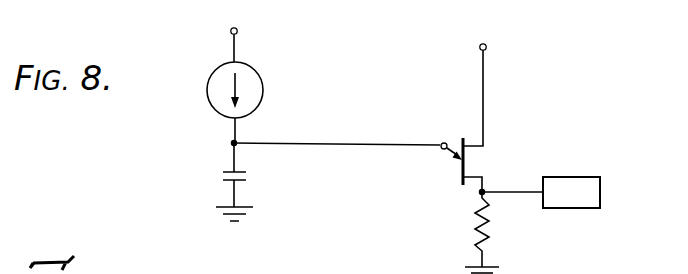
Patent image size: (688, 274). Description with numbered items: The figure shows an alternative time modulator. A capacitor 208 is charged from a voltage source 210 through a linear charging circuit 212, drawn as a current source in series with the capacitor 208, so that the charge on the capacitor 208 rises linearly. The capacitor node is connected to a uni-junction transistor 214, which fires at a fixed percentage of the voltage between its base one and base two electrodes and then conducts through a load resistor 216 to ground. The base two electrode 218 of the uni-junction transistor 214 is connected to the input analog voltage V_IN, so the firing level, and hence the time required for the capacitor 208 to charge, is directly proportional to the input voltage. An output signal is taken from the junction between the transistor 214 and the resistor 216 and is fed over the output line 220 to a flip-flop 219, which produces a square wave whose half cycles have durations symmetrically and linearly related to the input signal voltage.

The capacitor 208 is at (222, 177).
The voltage source 210 is at (238, 32).
The linear charging circuit 212 is at (263, 88).
The uni-junction transistor 214 is at (461, 182).
The load resistor 216 is at (476, 225).
The base 2 electrode 218 is at (470, 140).
The flip-flop 219 is at (592, 177).
The output line 220 is at (503, 191).